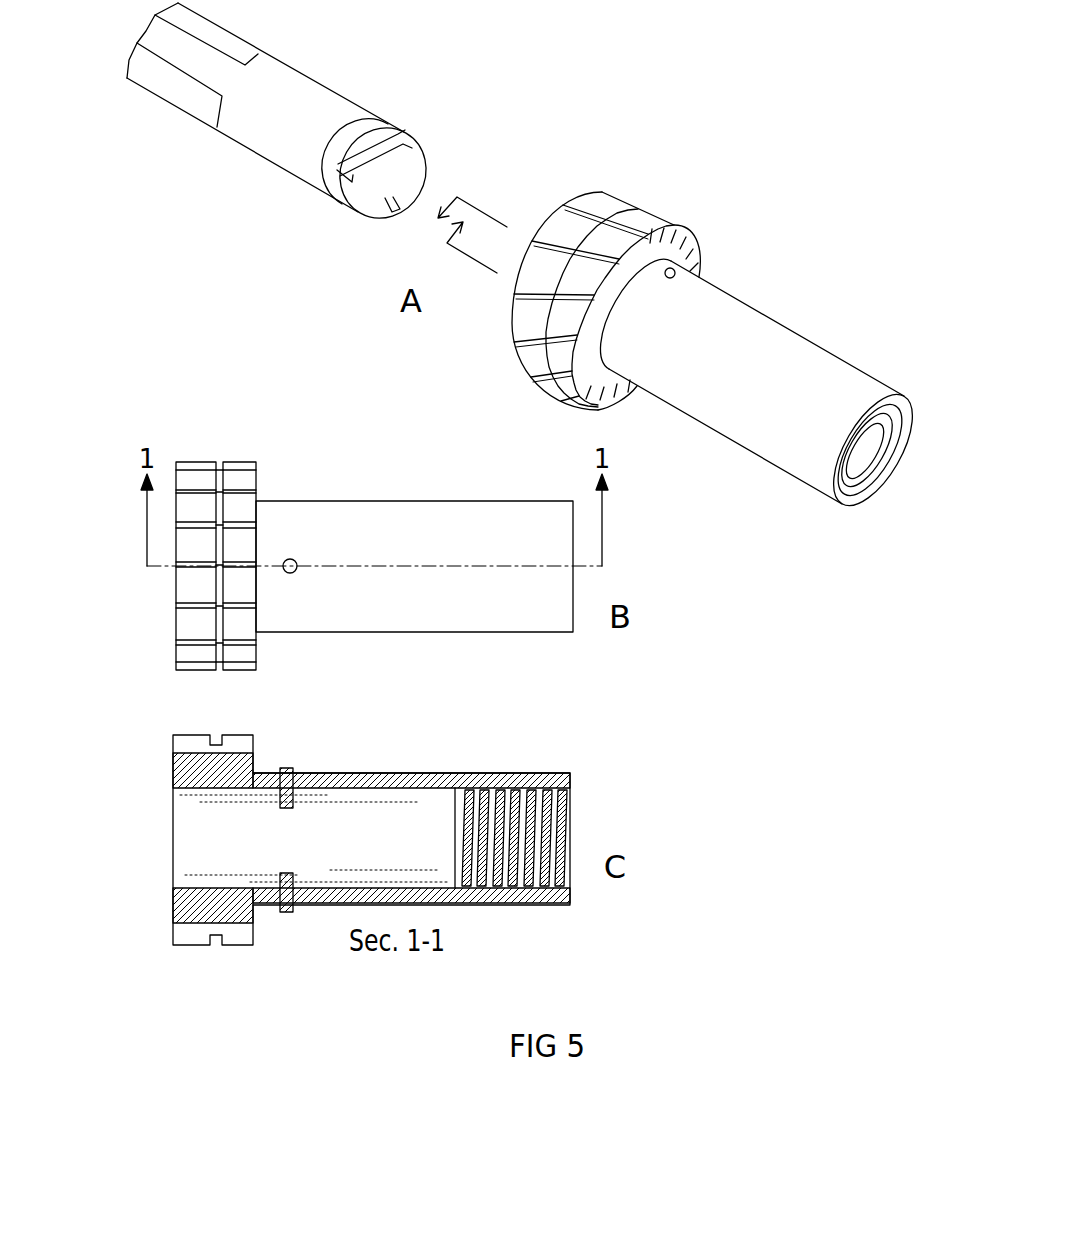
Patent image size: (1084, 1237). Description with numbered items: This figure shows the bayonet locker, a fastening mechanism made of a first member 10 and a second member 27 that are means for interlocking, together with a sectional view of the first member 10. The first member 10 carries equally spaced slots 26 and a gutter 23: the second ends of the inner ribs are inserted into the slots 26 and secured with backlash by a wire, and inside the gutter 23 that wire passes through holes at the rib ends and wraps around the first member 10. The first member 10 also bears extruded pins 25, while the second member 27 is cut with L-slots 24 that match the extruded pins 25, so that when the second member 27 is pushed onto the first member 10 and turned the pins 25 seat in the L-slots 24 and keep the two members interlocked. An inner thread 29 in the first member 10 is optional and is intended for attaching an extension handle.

The first member 10 is at (764, 413).
The gutter 23 is at (606, 251).
The L-slots 24 is at (338, 177).
The extruded pins 25 is at (678, 278).
The slots 26 is at (553, 247).
The second member 27 is at (310, 92).
The inner thread 29 is at (853, 477).